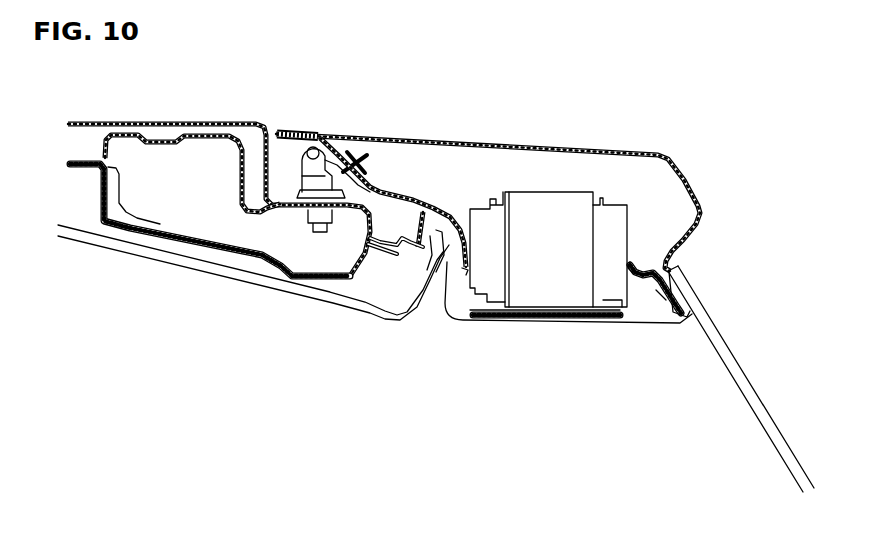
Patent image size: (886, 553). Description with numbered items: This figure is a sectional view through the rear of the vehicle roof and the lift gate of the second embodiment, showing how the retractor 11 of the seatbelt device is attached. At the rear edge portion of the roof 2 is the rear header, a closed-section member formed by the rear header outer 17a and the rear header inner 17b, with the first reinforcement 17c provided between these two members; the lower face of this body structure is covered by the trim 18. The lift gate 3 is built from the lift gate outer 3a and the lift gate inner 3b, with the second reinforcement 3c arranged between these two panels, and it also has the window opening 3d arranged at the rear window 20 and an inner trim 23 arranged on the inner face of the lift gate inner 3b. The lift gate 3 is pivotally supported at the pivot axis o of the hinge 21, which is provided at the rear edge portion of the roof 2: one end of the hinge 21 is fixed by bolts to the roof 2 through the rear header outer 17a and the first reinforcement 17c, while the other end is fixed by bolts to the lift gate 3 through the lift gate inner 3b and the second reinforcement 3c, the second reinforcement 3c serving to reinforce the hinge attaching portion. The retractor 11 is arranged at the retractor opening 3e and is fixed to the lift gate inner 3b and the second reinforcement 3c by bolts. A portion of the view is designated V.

The view direction arrow V is at (180, 106).
The roof 2 is at (108, 122).
The rear header outer 17a is at (103, 147).
The rear header inner 17b is at (98, 194).
The first reinforcement 17c is at (126, 207).
The trim 18 is at (140, 257).
The hinge 21 is at (300, 170).
The pivot axis o is at (317, 148).
The lift gate 3 is at (513, 207).
The lift gate outer 3a is at (486, 142).
The lift gate inner 3b is at (660, 286).
The second reinforcement 3c is at (648, 265).
The window opening 3d is at (699, 318).
The retractor opening 3e is at (630, 262).
The retractor 11 is at (530, 192).
The rear window 20 is at (745, 360).
The inner trim 23 is at (492, 328).